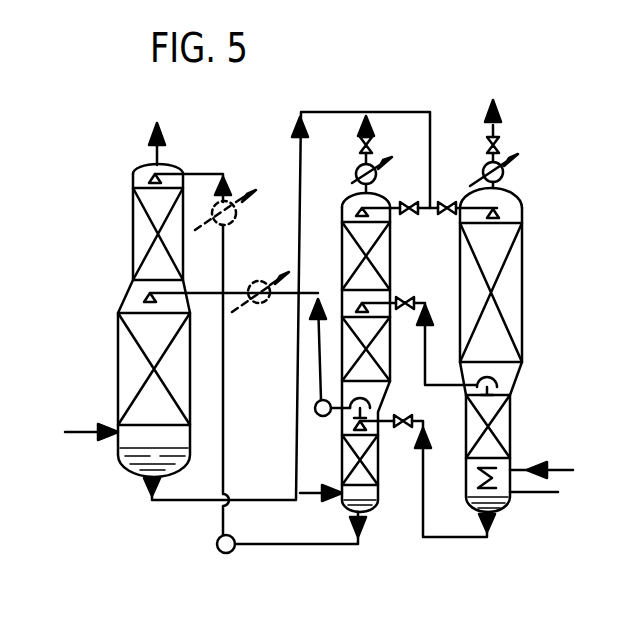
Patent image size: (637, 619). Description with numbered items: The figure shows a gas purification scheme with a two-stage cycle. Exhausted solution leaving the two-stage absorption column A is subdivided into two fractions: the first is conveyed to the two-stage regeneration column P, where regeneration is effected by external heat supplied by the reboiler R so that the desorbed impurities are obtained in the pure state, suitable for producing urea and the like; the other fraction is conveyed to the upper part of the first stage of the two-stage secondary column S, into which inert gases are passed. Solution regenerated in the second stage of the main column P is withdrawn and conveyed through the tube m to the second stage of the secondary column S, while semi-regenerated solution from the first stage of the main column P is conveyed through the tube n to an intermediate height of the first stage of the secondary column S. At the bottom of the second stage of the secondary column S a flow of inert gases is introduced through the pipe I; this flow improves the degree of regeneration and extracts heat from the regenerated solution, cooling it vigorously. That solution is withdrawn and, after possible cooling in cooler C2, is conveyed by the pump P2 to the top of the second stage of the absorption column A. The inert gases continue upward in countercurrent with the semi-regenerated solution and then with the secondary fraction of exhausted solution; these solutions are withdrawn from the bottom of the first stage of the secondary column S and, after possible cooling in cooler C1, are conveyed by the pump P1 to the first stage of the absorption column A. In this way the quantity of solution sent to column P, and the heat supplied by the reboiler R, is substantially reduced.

The two-stage absorption column A is at (127, 309).
The two-stage secondary column S is at (355, 314).
The two-stage regeneration column P is at (500, 306).
The cooler C1 is at (261, 302).
The cooler C2 is at (228, 216).
The pump P1 is at (326, 426).
The pump P2 is at (213, 543).
The pipe I is at (321, 483).
The reboiler R is at (543, 485).
The tube n is at (419, 342).
The tube m is at (427, 478).